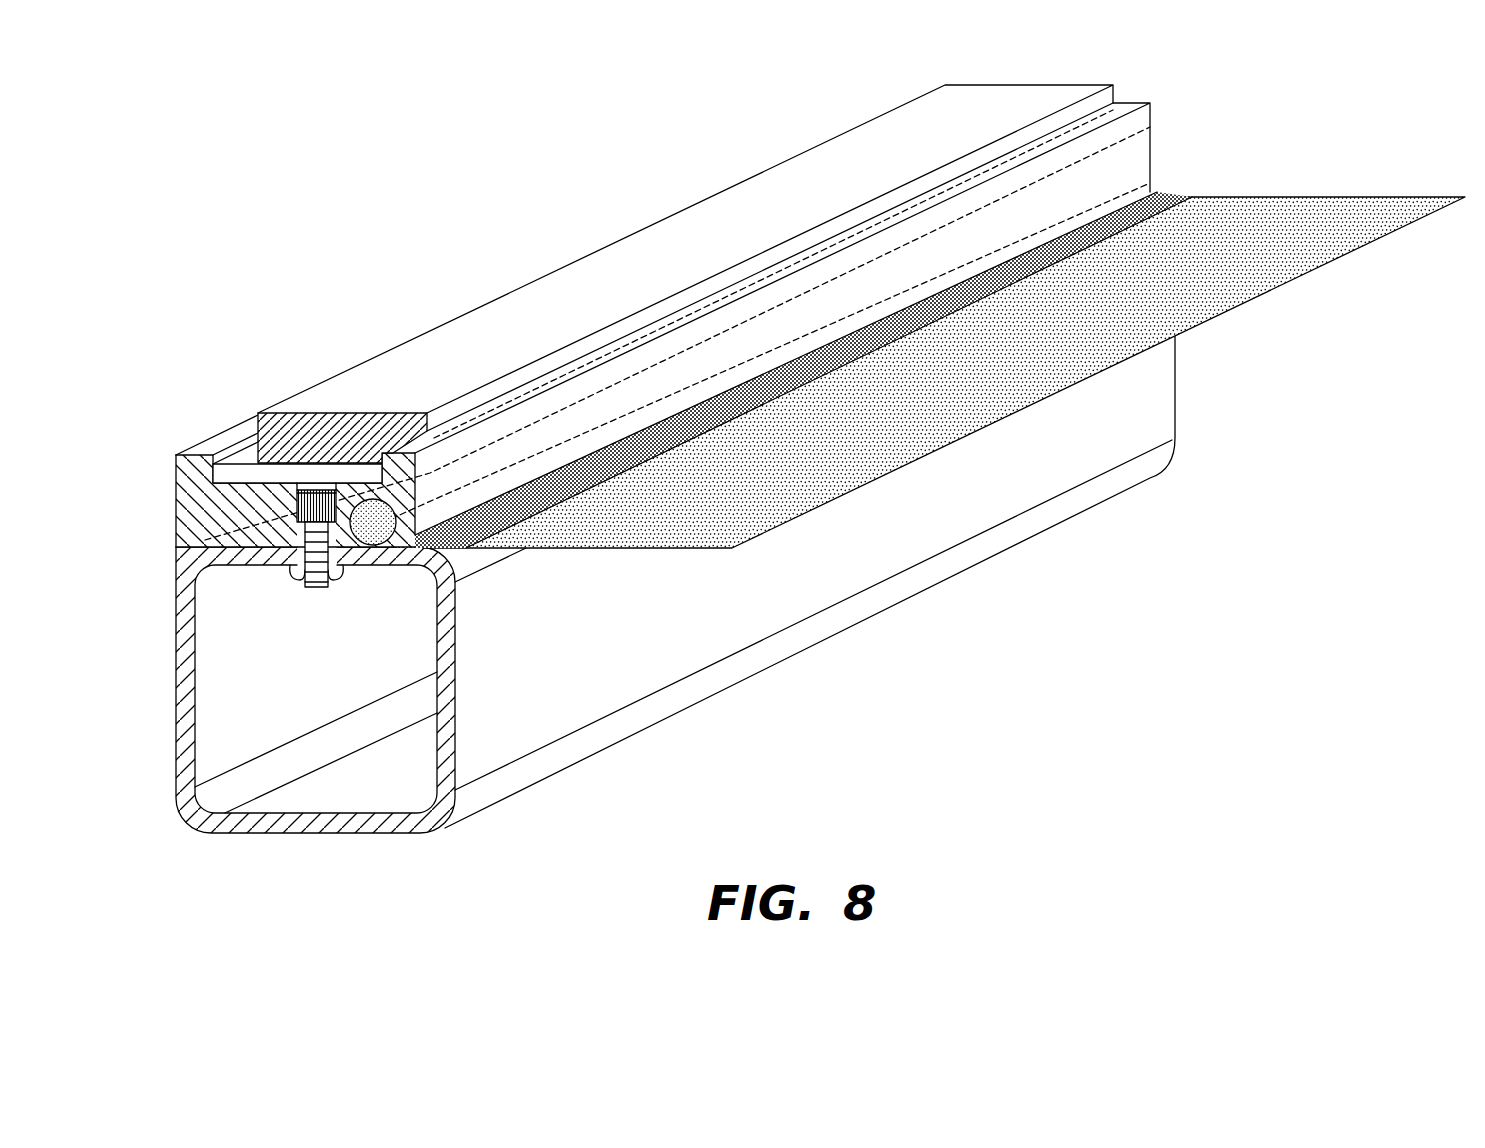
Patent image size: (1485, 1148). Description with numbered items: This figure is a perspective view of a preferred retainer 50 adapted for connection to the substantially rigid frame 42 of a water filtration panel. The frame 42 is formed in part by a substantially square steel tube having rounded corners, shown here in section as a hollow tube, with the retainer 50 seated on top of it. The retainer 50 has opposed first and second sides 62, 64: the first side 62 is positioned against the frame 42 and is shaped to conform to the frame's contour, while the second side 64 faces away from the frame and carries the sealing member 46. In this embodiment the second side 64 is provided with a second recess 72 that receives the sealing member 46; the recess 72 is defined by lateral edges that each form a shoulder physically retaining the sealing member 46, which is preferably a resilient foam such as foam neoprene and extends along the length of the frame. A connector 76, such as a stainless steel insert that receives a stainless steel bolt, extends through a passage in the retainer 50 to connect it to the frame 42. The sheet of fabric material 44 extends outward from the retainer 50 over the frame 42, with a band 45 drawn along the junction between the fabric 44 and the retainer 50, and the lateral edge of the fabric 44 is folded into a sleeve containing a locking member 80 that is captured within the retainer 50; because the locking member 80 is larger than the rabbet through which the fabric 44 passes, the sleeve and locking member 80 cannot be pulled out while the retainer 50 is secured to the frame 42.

The substantially rigid frame 42 is at (475, 618).
The sheet of fabric material 44 is at (1277, 277).
The adhesive strip 45 is at (1160, 188).
The sealing member 46 is at (1112, 96).
The retainer 50 is at (180, 442).
The first side 62 is at (248, 548).
The second side 64 is at (210, 447).
The second recess 72 is at (248, 473).
The connector 76 is at (322, 590).
The locking member 80 is at (374, 540).